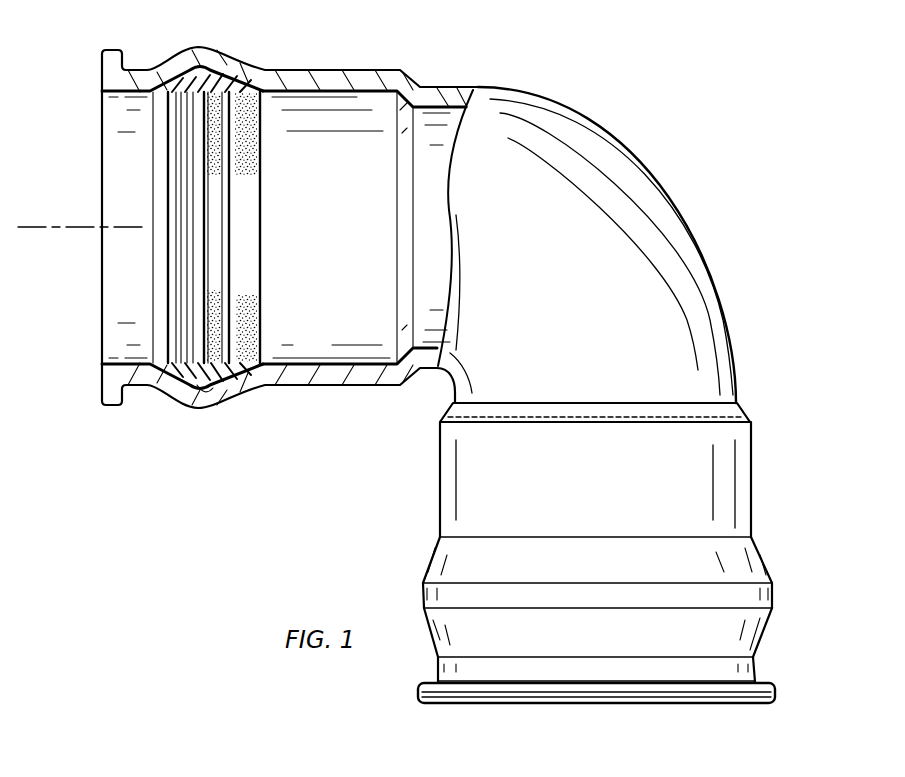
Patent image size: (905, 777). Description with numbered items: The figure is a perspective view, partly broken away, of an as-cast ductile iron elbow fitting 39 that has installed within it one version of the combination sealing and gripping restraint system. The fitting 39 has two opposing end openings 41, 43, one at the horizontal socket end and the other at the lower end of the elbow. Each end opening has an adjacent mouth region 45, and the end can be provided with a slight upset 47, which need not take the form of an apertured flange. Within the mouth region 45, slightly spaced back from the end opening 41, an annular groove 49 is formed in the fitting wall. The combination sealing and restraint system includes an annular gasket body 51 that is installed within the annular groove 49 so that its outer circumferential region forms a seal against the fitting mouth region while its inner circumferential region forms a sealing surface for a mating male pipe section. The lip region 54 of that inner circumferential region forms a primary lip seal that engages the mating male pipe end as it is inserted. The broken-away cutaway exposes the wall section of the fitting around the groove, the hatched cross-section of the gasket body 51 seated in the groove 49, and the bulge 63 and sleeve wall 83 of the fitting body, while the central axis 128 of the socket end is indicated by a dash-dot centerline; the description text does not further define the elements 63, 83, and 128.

The as-cast fitting 39 is at (773, 288).
The end opening 41 is at (85, 202).
The end opening 43 is at (623, 719).
The mouth region 45 is at (122, 95).
The upset 47 is at (116, 405).
The annular groove 49 is at (213, 406).
The annular gasket body 51 is at (236, 88).
The lip region 54 is at (258, 356).
The annular bulge 63 is at (202, 66).
The sleeve wall 83 is at (397, 91).
The central axis 128 is at (78, 229).